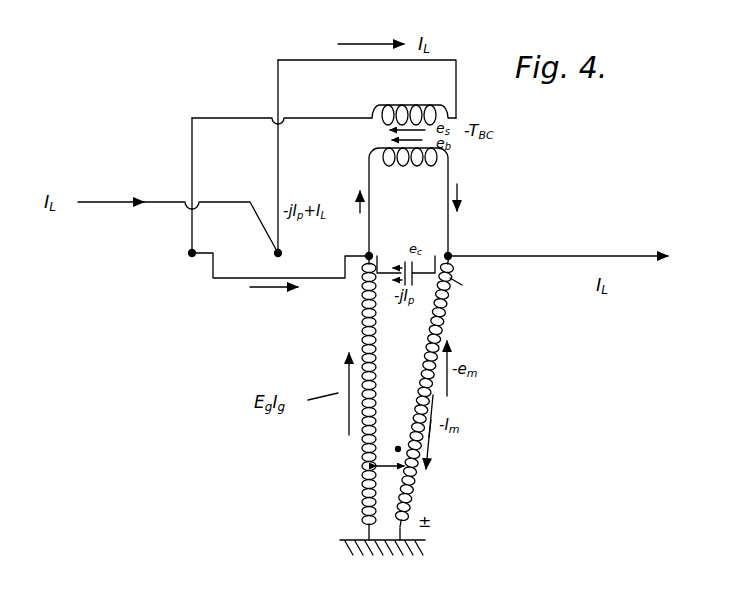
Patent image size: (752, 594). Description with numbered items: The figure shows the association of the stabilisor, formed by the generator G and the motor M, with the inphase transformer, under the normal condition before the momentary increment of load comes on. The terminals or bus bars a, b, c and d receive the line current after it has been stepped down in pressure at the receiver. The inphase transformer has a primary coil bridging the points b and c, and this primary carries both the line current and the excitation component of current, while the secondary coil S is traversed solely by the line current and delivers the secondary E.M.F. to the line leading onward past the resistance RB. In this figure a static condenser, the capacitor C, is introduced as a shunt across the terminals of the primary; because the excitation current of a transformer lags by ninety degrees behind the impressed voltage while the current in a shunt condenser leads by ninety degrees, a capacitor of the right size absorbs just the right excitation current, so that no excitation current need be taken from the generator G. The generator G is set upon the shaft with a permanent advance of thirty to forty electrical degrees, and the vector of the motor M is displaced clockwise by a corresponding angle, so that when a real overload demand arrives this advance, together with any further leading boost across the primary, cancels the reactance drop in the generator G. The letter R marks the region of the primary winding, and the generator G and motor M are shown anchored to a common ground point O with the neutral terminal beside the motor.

The secondary coil S is at (414, 101).
The primary winding / reactor R is at (408, 202).
The terminal d is at (181, 247).
The terminal a is at (265, 247).
The terminal b is at (358, 245).
The terminal c is at (460, 245).
The load resistance RB is at (576, 270).
The generator coil of stabilisor G is at (343, 398).
The motor of stabilisor M is at (425, 397).
The capacitor C is at (465, 284).
The ground point O is at (382, 560).